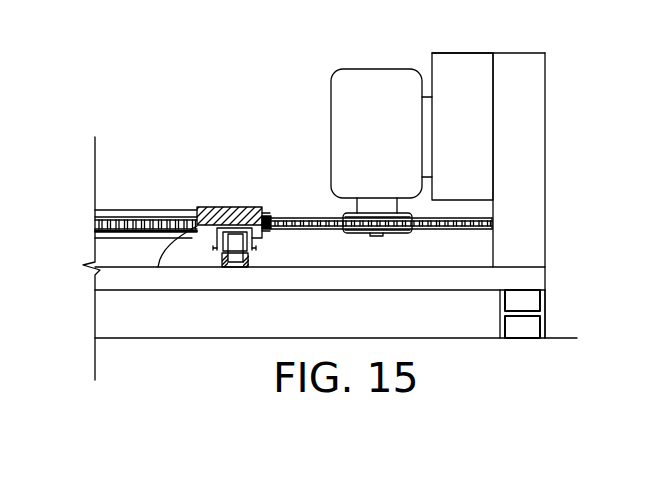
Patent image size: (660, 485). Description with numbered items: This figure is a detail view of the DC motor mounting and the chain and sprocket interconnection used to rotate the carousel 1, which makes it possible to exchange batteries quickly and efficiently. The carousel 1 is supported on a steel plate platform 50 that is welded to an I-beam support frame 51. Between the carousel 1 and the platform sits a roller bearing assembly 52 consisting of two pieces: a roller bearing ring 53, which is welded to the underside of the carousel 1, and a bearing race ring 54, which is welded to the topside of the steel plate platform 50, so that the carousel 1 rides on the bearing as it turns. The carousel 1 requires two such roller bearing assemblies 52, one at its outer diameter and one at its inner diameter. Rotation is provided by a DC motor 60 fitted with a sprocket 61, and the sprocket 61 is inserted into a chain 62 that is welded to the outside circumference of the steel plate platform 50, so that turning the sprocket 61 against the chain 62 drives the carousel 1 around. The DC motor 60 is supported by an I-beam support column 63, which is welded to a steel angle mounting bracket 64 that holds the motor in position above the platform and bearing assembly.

The carousel 1 is at (186, 207).
The steel plate platform 50 is at (522, 278).
The I-beam support frame 51 is at (545, 307).
The roller bearing assembly 52 is at (225, 278).
The roller bearing ring 53 is at (252, 236).
The bearing race ring 54 is at (248, 260).
The DC motor 60 is at (348, 87).
The sprocket 61 is at (298, 218).
The chain 62 is at (152, 228).
The I-beam support column 63 is at (535, 157).
The steel angle mounting bracket 64 is at (463, 53).